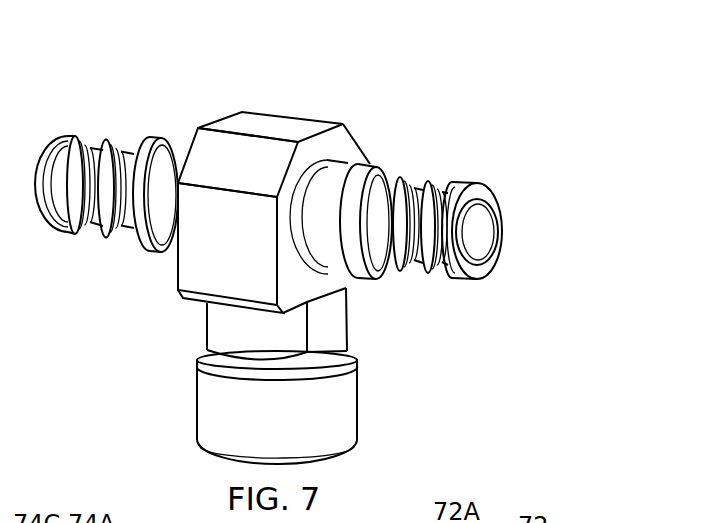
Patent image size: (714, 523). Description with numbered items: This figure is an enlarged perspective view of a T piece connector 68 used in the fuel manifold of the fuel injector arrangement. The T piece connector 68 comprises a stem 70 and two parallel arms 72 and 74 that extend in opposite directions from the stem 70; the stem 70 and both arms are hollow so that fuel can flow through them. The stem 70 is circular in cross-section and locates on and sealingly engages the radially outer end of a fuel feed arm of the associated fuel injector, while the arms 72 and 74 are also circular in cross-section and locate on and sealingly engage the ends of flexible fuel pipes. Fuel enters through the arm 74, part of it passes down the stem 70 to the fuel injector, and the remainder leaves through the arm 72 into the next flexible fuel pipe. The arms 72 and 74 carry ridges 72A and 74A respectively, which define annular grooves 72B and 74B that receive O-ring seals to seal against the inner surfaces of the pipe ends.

The T piece connector 68 is at (540, 238).
The stem 70 is at (358, 373).
The arm 72 is at (348, 170).
The ridges 72A is at (433, 278).
The annular grooves 72B is at (420, 176).
The arm 74 is at (153, 252).
The ridges 74A is at (118, 238).
The annular grooves 74B is at (132, 143).